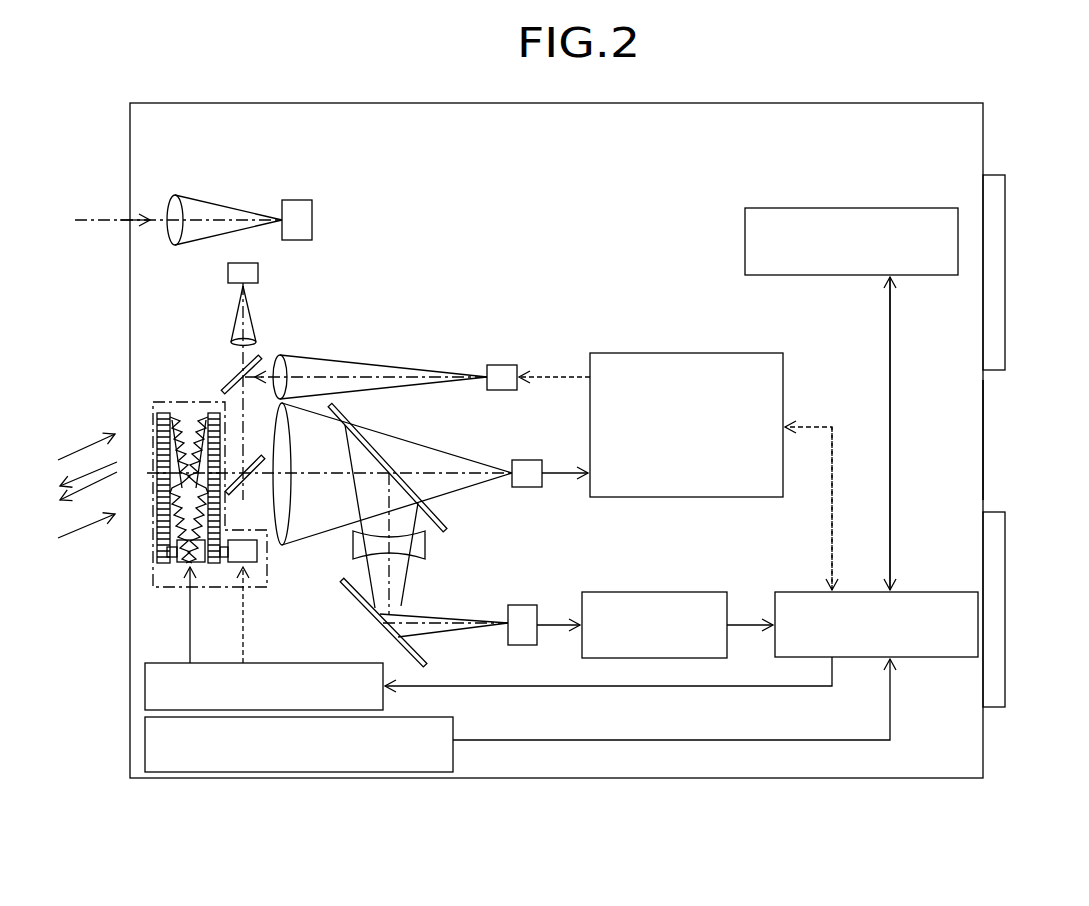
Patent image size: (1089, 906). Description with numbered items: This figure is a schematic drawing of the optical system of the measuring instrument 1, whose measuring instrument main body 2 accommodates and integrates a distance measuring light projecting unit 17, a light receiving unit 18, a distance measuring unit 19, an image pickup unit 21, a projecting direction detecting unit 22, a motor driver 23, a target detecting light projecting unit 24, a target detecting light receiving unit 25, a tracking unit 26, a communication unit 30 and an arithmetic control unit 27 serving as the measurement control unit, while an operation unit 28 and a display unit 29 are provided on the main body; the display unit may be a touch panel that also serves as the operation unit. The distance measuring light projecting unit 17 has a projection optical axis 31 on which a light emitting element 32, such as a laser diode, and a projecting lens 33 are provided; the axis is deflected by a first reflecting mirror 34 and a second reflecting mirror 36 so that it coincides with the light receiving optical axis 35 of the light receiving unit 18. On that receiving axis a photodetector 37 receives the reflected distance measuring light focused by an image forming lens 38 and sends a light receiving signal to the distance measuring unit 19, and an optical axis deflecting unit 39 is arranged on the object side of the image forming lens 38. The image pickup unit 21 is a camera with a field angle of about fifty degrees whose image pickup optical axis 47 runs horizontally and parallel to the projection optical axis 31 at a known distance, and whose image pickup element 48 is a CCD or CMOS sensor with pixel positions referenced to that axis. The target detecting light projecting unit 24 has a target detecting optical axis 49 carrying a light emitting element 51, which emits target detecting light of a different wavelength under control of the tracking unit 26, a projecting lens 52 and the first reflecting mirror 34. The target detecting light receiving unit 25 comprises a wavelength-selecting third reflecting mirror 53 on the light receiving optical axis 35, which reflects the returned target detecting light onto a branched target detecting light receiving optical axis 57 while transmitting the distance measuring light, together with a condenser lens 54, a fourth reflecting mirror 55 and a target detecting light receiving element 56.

The surveying instrument 1 is at (307, 97).
The measuring instrument main body 2 is at (983, 447).
The distance measuring light projecting unit 17 is at (360, 346).
The light receiving unit 18 is at (365, 474).
The distance measuring unit 19 is at (677, 352).
The image pickup unit 21 is at (224, 183).
The projecting direction detecting unit 22 is at (453, 718).
The motor driver 23 is at (262, 662).
The target detecting light projecting unit 24 is at (255, 373).
The target detecting light receiving unit 25 is at (425, 550).
The tracking unit 26 is at (692, 591).
The arithmetic control unit 27 is at (920, 590).
The operation unit 28 is at (1005, 275).
The display unit 29 is at (1005, 600).
The communication unit 30 is at (925, 277).
The projection optical axis 31 is at (364, 380).
The light emitting element 32 is at (500, 365).
The projecting lens 33 is at (286, 372).
The first reflecting mirror 34 is at (235, 380).
The light receiving optical axis 35 is at (457, 472).
The second reflecting mirror 36 is at (263, 463).
The photodetector 37 is at (523, 460).
The image forming lens 38 is at (288, 504).
The optical axis deflecting unit 39 is at (182, 400).
The image pickup optical axis 47 is at (197, 220).
The image pickup element 48 is at (302, 200).
The target detecting optical axis 49 is at (248, 324).
The light emitting element 51 is at (258, 273).
The projecting lens 52 is at (233, 334).
The third reflecting mirror 53 is at (378, 453).
The condenser lens 54 is at (427, 548).
The fourth reflecting mirror 55 is at (358, 603).
The target detecting light receiving element 56 is at (525, 604).
The target detecting light receiving optical axis 57 is at (453, 623).